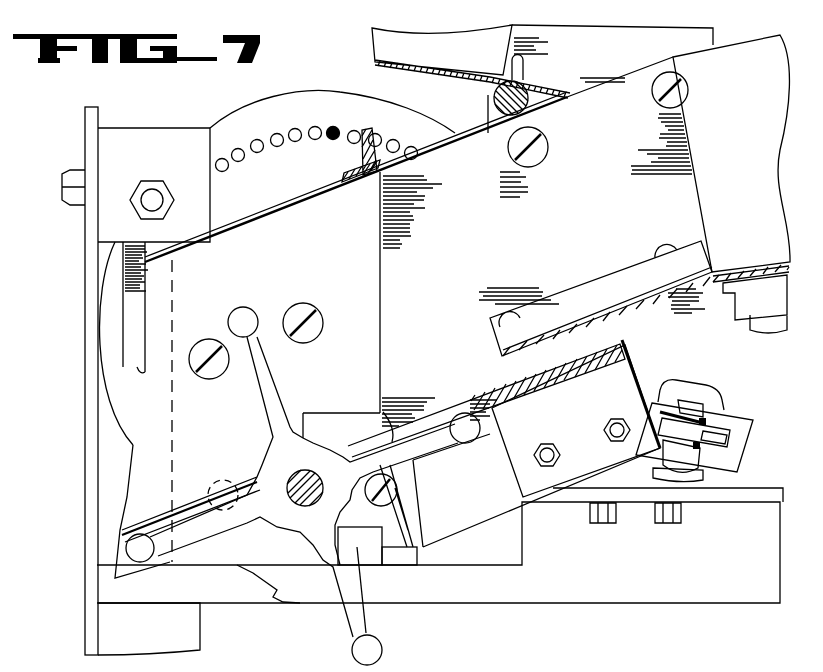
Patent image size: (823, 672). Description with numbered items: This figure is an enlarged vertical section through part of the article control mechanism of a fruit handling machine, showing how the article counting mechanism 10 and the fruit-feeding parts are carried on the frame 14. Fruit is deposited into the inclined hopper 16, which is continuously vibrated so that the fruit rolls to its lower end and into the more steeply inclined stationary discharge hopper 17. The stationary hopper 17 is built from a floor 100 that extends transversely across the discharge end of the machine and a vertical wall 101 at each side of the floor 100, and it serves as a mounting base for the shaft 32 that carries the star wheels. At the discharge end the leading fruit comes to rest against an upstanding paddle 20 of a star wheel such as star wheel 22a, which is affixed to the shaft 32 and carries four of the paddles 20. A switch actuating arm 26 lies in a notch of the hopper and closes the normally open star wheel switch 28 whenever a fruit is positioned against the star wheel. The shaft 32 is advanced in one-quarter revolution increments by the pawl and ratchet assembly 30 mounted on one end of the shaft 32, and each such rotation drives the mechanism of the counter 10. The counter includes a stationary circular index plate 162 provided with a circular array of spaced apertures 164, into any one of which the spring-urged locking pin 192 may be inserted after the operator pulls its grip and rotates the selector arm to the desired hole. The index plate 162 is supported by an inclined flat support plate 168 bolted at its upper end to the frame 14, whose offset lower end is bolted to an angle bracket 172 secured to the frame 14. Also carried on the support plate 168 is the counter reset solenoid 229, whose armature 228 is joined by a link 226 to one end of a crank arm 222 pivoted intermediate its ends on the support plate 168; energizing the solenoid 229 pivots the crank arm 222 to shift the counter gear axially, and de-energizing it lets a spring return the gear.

The article counting mechanism 10 is at (250, 101).
The frame 14 is at (85, 444).
The inclined hopper 16 is at (730, 157).
The stationary discharge hopper 17 is at (426, 148).
The paddle 20 is at (262, 366).
The star wheel 22a is at (283, 455).
The switch actuating arm 26 is at (380, 410).
The star wheel switch 28 is at (547, 434).
The pawl and ratchet assembly 30 is at (253, 576).
The shaft 32 is at (307, 472).
The floor 100 is at (540, 374).
The vertical wall 101 is at (553, 247).
The index plate 162 is at (296, 106).
The apertures 164 is at (348, 141).
The support plate 168 is at (247, 216).
The angle bracket 172 is at (675, 480).
The locking pin 192 is at (336, 131).
The crank arm 222 is at (652, 403).
The link 226 is at (692, 430).
The armature 228 is at (720, 440).
The counter reset solenoid 229 is at (693, 388).